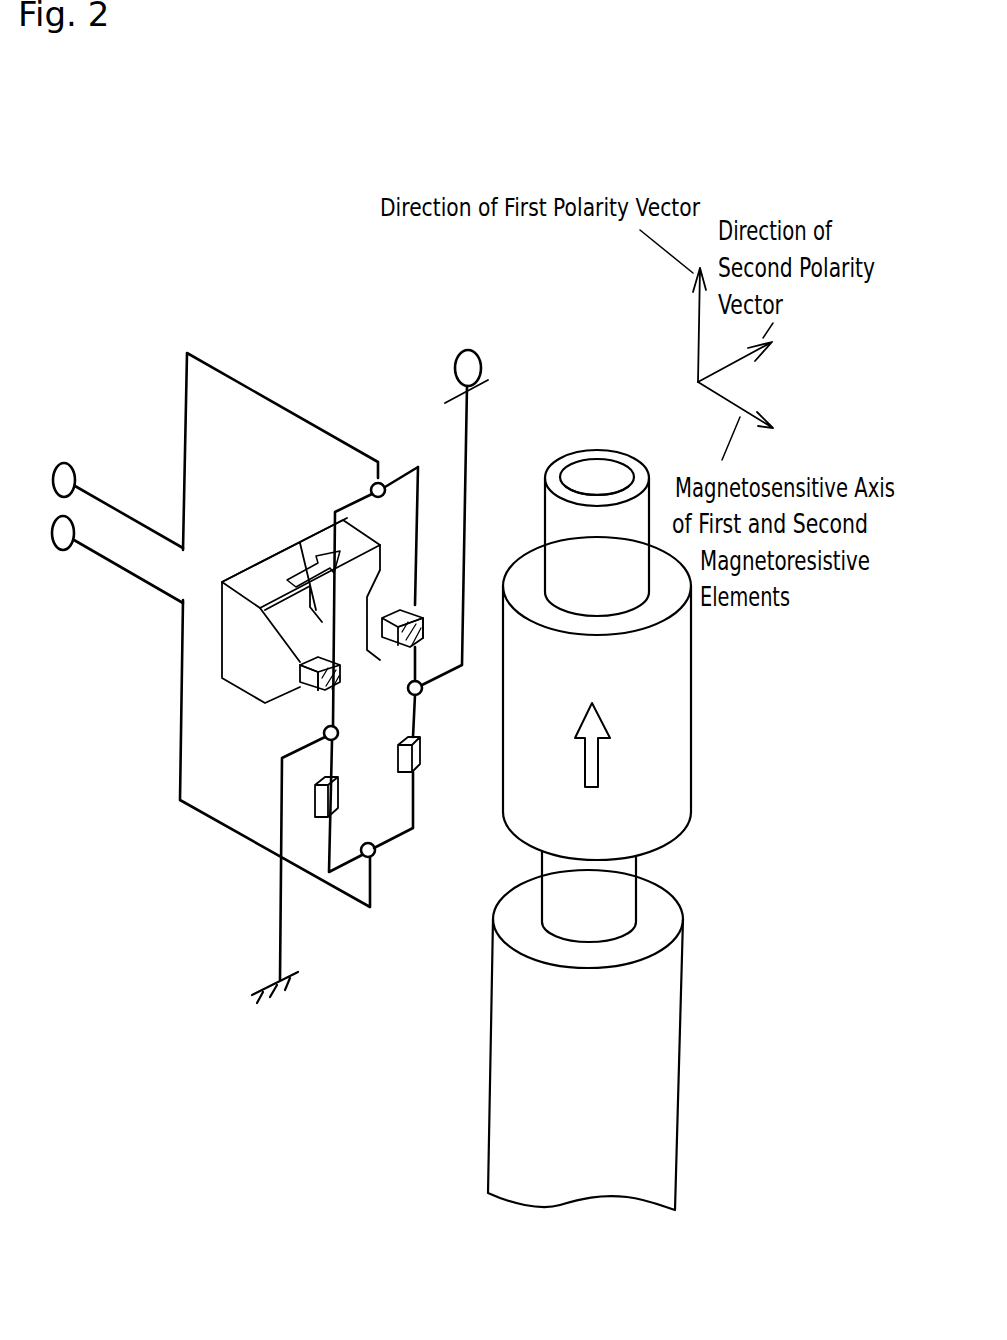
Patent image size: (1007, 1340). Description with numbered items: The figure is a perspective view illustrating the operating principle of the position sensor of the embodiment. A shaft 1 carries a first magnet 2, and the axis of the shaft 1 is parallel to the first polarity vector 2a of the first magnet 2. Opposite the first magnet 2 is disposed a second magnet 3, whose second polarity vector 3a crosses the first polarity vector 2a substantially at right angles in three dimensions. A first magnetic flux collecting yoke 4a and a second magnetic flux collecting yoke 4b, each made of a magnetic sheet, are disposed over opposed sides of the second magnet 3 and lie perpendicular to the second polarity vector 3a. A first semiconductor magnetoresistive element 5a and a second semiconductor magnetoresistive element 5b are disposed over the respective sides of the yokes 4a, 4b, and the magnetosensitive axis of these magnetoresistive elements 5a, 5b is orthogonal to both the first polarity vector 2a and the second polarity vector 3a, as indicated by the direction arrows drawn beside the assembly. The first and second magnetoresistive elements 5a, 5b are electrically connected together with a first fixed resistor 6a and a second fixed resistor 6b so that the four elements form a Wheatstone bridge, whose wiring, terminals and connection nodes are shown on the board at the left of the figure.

The shaft 1 is at (647, 982).
The first magnet 2 is at (673, 677).
The first polarity vector 2a is at (590, 768).
The second magnet 3 is at (312, 534).
The second polarity vector 3a is at (300, 567).
The first magnetic flux collecting yoke 4a is at (410, 605).
The second magnetic flux collecting yoke 4b is at (235, 653).
The first semiconductor magnetoresistive element 5a is at (407, 633).
The second semiconductor magnetoresistive element 5b is at (310, 678).
The first fixed resistor 6a is at (403, 768).
The second fixed resistor 6b is at (315, 802).